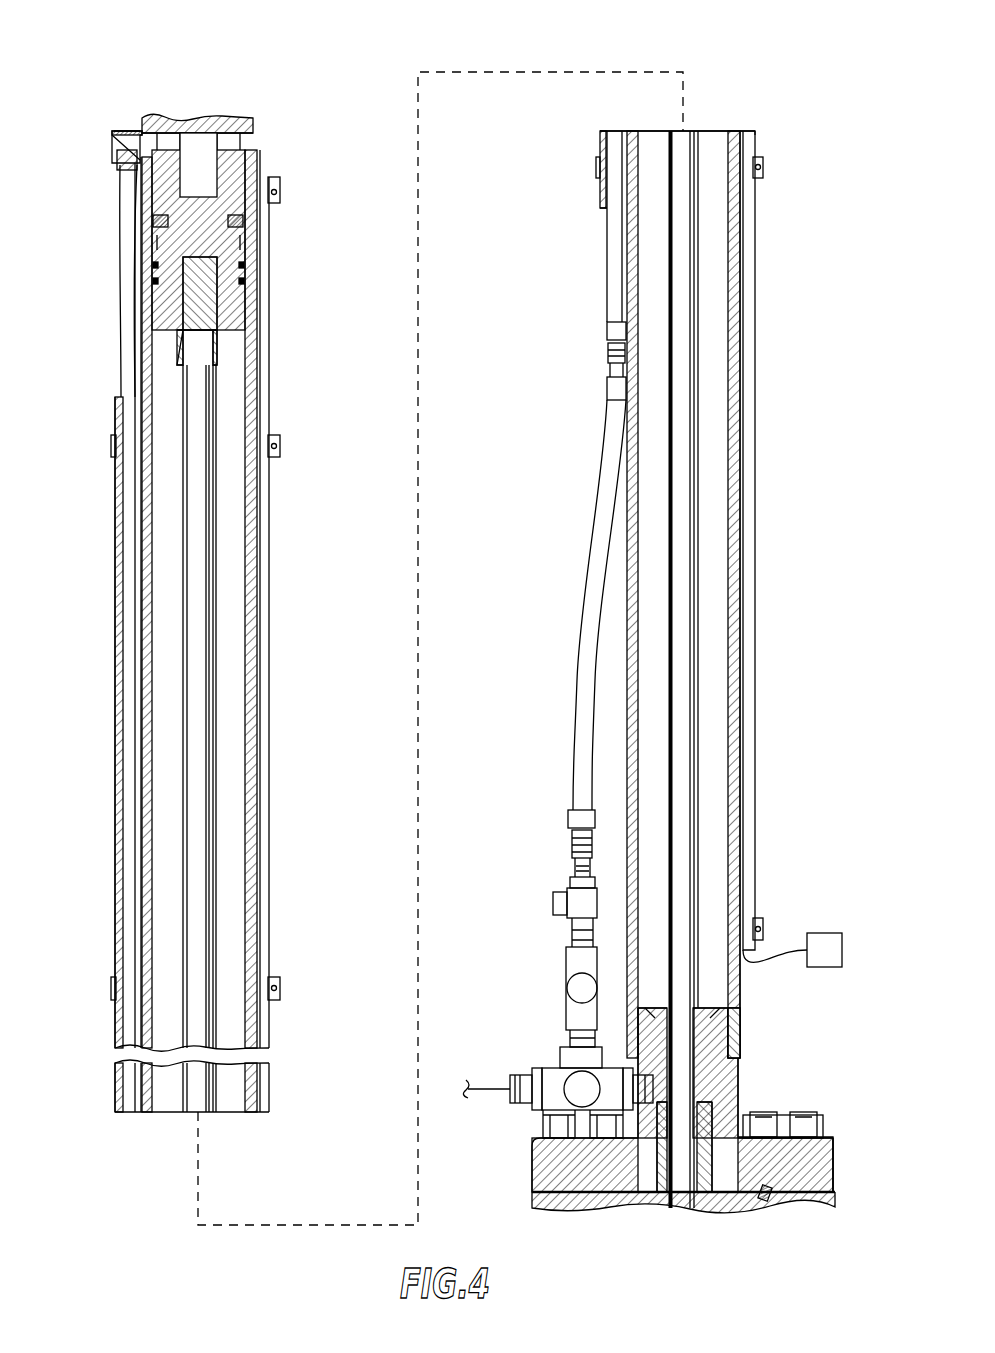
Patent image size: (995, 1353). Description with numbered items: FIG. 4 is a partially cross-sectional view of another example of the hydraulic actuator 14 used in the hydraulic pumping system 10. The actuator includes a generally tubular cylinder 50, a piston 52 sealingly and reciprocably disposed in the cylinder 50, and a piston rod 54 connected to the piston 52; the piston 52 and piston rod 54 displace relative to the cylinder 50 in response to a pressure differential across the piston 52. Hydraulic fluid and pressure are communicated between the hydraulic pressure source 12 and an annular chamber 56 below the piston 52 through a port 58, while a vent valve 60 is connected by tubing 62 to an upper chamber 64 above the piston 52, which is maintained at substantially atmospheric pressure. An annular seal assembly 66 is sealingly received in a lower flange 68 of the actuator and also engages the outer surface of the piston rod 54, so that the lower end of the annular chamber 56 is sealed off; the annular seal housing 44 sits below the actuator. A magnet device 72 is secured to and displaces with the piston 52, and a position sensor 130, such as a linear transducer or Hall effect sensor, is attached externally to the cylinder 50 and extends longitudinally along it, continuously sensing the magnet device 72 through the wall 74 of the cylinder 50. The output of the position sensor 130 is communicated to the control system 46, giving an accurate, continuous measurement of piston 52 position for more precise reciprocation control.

The lift assembly 10 is at (788, 84).
The hydraulic pressure source 12 is at (468, 1057).
The hydraulic actuator 14 is at (259, 657).
The annular seal housing 44 is at (532, 1195).
The control system 46 is at (818, 967).
The cylinder 50 is at (143, 695).
The piston 52 is at (232, 338).
The piston rod 54 is at (210, 736).
The annular chamber 56 is at (228, 840).
The port 58 is at (620, 1085).
The vent valve 60 is at (566, 988).
The tubing 62 is at (120, 225).
The upper chamber 64 is at (196, 148).
The annular seal assembly 66 is at (725, 1100).
The lower flange 68 is at (535, 1140).
The magnet device 72 is at (245, 223).
The wall 74 is at (740, 428).
The position sensor 130 is at (271, 546).